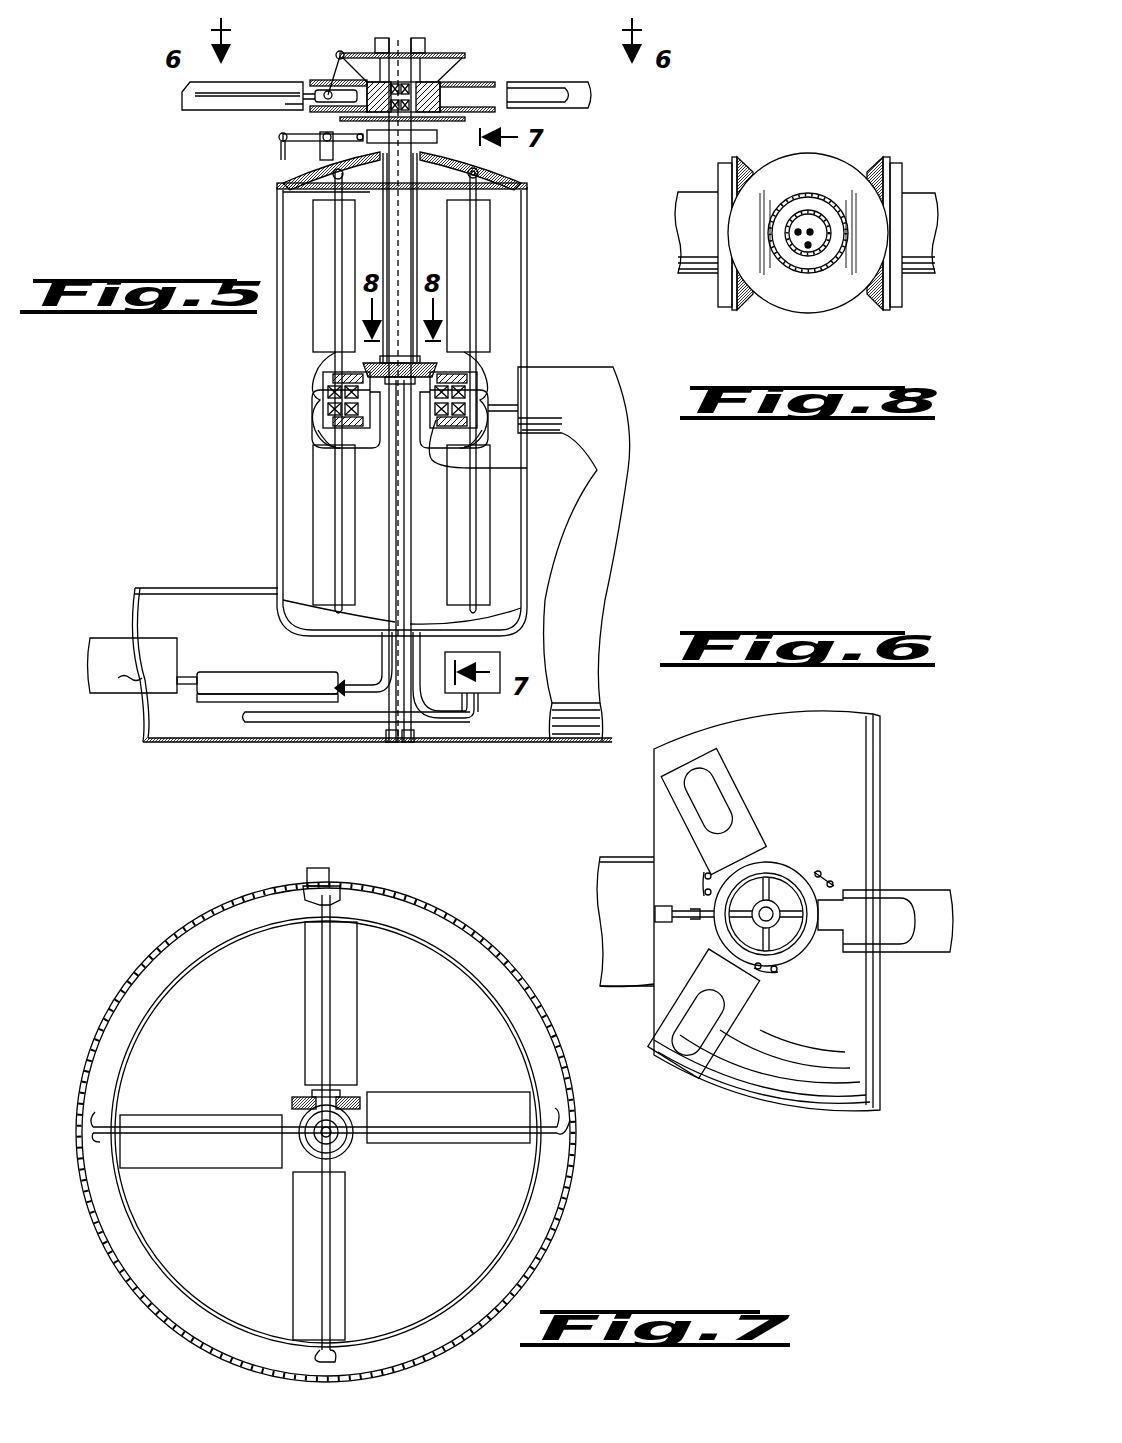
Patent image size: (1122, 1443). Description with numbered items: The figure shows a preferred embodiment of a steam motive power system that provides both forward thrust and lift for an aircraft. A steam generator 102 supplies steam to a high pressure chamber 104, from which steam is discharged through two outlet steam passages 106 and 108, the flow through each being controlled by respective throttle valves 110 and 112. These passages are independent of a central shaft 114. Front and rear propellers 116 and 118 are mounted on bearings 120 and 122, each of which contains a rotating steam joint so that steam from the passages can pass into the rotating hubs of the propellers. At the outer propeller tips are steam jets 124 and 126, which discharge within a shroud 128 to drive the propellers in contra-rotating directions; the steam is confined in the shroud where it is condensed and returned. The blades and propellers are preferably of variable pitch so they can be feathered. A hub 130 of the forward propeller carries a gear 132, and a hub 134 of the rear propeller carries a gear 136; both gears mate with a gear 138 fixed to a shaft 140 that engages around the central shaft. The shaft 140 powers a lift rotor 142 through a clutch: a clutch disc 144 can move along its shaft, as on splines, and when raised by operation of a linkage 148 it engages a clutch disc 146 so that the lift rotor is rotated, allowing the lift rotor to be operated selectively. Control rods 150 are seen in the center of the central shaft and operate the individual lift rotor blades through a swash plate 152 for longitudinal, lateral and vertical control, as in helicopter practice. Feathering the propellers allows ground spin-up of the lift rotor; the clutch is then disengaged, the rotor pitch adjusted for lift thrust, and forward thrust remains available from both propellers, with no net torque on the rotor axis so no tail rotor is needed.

In FIG. 5, the steam generator 102 is at (143, 665).
In FIG. 5, the high pressure chamber 104 is at (268, 672).
In FIG. 5, the outlet steam passage 106 is at (425, 700).
In FIG. 5, the outlet steam passage 108 is at (385, 668).
In FIG. 5, the throttle valve 110 is at (366, 712).
In FIG. 5, the throttle valve 112 is at (330, 690).
In FIG. 5, the central shaft 114 is at (402, 738).
In FIG. 8, the central shaft 114 is at (820, 262).
In FIG. 5, the front propeller 116 is at (490, 300).
In FIG. 7, the front propeller 116 is at (350, 1024).
In FIG. 5, the rear propeller 118 is at (313, 235).
In FIG. 7, the rear propeller 118 is at (465, 1092).
In FIG. 5, the bearing 120 is at (485, 385).
In FIG. 7, the bearing 120 is at (345, 1145).
In FIG. 5, the bearing 122 is at (323, 386).
In FIG. 5, the steam jet 124 is at (478, 180).
In FIG. 7, the steam jet 124 is at (305, 888).
In FIG. 5, the steam jet 126 is at (292, 181).
In FIG. 7, the steam jet 126 is at (577, 1131).
In FIG. 5, the shroud 128 is at (527, 201).
In FIG. 6, the shroud 128 is at (866, 725).
In FIG. 7, the shroud 128 is at (172, 936).
In FIG. 8, the hub 130 is at (912, 190).
In FIG. 5, the gear 132 is at (527, 468).
In FIG. 8, the gear 132 is at (876, 166).
In FIG. 7, the gear 132 is at (302, 1150).
In FIG. 8, the hub 134 is at (689, 192).
In FIG. 5, the gear 136 is at (323, 439).
In FIG. 8, the gear 136 is at (735, 160).
In FIG. 5, the gear 138 is at (322, 364).
In FIG. 8, the gear 138 is at (786, 162).
In FIG. 7, the gear 138 is at (296, 1098).
In FIG. 5, the shaft 140 is at (420, 252).
In FIG. 8, the shaft 140 is at (804, 258).
In FIG. 7, the shaft 140 is at (345, 897).
In FIG. 5, the lift rotor 142 is at (563, 85).
In FIG. 6, the lift rotor 142 is at (928, 897).
In FIG. 5, the clutch disc 144 is at (345, 125).
In FIG. 5, the clutch disc 146 is at (468, 110).
In FIG. 5, the linkage 148 is at (280, 140).
In FIG. 6, the linkage 148 is at (665, 920).
In FIG. 8, the control rods 150 is at (776, 272).
In FIG. 5, the swash plate 152 is at (348, 53).
In FIG. 6, the swash plate 152 is at (785, 880).